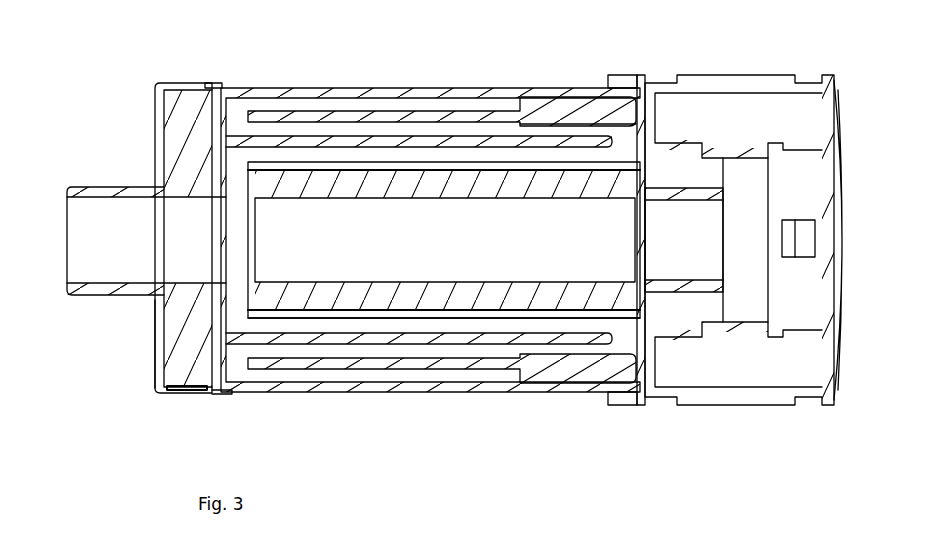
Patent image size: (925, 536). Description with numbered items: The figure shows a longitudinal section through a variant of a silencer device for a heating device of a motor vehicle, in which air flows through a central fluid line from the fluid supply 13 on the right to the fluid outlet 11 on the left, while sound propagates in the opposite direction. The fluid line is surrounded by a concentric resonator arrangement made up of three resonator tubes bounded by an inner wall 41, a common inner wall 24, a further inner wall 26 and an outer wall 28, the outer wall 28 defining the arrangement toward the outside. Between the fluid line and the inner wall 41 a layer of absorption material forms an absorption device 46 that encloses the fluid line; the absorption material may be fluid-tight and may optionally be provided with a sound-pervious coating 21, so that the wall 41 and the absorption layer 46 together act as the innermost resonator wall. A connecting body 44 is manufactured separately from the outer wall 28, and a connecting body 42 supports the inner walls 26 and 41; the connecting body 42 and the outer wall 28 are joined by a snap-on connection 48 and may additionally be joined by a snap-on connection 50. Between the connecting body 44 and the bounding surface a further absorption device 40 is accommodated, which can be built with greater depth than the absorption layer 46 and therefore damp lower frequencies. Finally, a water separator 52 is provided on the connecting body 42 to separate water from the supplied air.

The fluid outlet 11 is at (146, 241).
The fluid supply 13 is at (684, 240).
The coating 21 is at (366, 281).
The inner wall 24 is at (240, 142).
The inner wall 26 is at (393, 110).
The outer wall 28 is at (458, 86).
The absorption device 40 is at (192, 330).
The inner wall 41 is at (378, 312).
The connecting body 42 is at (642, 84).
The connecting body 44 is at (152, 352).
The absorption device 46 is at (455, 300).
The snap-on connection 48 is at (214, 84).
The snap-on connection 50 is at (600, 98).
The water separator 52 is at (733, 370).